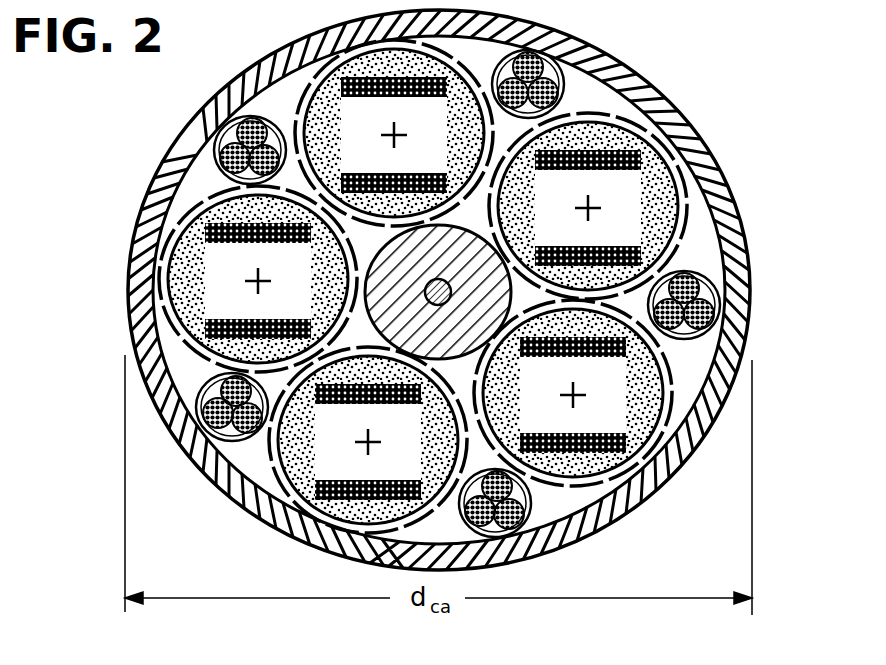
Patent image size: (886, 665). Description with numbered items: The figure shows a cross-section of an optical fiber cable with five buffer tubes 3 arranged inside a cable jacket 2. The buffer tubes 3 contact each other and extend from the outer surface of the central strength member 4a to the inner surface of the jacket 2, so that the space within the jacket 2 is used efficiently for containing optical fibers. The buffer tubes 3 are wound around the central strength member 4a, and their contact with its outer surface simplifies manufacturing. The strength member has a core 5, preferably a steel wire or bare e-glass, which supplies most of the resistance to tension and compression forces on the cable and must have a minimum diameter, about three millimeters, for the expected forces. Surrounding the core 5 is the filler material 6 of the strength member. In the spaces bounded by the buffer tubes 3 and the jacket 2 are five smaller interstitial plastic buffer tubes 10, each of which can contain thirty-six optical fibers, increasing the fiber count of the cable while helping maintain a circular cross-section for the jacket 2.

The cable jacket 2 is at (720, 168).
The buffer tubes 3 is at (312, 75).
The central strength member 4a is at (485, 296).
The core 5 is at (387, 244).
The filler material 6 is at (408, 322).
The interstitial buffer tubes 10 is at (545, 42).